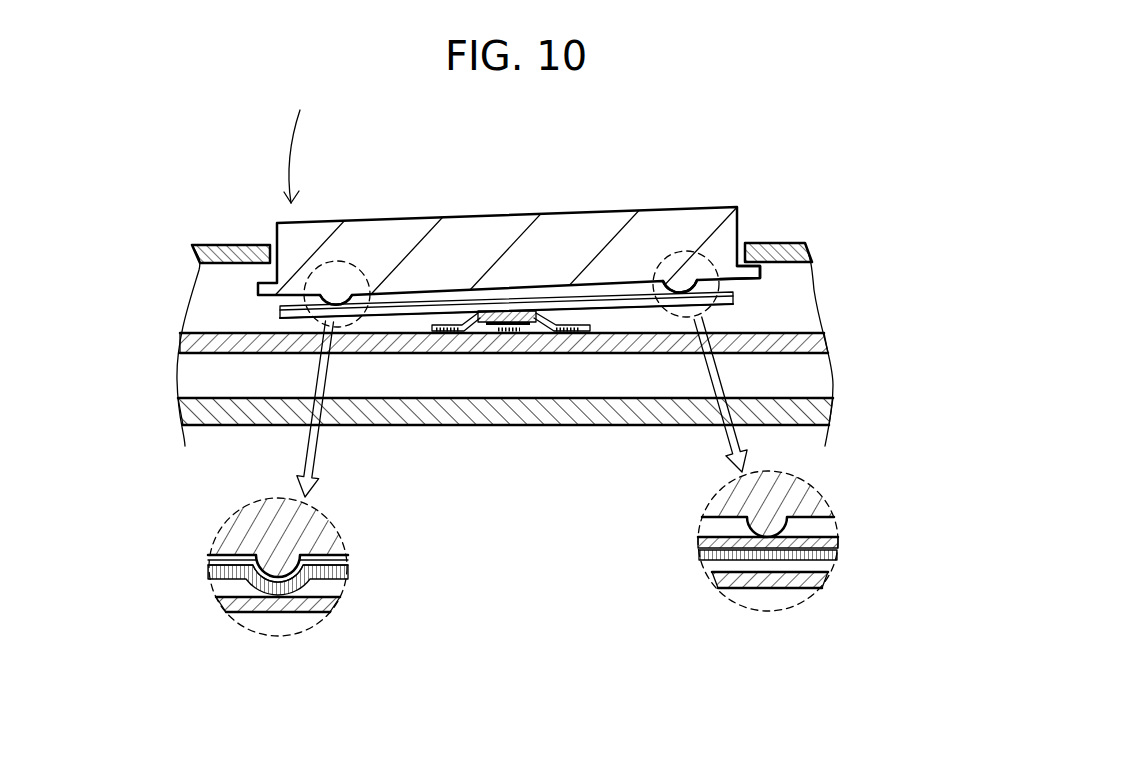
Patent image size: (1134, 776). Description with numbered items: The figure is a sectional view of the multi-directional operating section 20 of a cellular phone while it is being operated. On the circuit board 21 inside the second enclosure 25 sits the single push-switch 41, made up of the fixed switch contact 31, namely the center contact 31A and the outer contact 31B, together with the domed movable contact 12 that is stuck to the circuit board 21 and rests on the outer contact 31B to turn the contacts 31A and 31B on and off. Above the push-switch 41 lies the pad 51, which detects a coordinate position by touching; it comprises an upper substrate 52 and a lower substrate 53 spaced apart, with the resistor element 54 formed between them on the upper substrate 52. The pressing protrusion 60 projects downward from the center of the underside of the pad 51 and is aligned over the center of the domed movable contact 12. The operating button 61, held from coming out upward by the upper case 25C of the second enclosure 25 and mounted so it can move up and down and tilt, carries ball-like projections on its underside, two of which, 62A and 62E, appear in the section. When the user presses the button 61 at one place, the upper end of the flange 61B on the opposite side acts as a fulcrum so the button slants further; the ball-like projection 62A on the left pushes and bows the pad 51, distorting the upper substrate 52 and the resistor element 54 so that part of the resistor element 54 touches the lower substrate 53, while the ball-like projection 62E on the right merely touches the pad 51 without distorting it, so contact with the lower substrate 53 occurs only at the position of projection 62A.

The multi-directional operating section 20 is at (735, 167).
The circuit board 21 is at (810, 353).
The second enclosure 25 is at (231, 254).
The upper case 25C is at (805, 243).
The operating button 61 is at (436, 232).
The flange 61B is at (755, 268).
The ball-like projection 62A is at (327, 300).
The ball-like projection 62E is at (682, 288).
The pressing protrusion 60 is at (518, 312).
The pad 51 is at (740, 297).
The upper substrate 52 is at (348, 563).
The lower substrate 53 is at (320, 603).
The resistor element 54 is at (340, 575).
The fixed switch contact 31 is at (485, 421).
The center contact 31A is at (495, 330).
The outer contact 31B is at (446, 330).
The domed movable contact 12 is at (551, 330).
The push-switch 41 is at (508, 363).